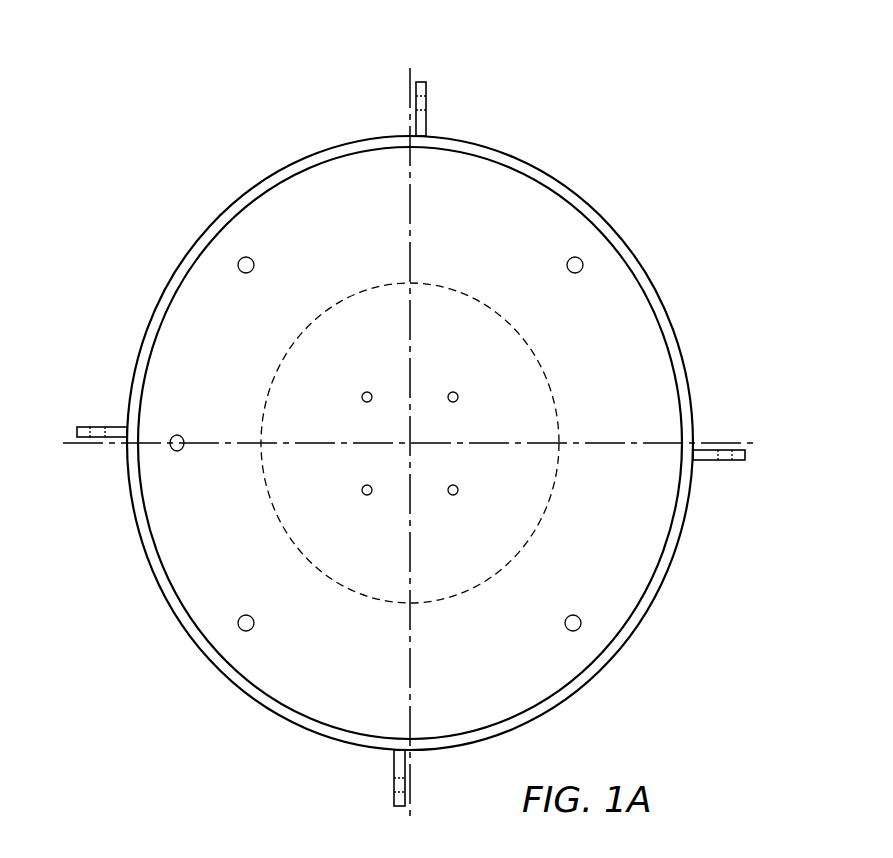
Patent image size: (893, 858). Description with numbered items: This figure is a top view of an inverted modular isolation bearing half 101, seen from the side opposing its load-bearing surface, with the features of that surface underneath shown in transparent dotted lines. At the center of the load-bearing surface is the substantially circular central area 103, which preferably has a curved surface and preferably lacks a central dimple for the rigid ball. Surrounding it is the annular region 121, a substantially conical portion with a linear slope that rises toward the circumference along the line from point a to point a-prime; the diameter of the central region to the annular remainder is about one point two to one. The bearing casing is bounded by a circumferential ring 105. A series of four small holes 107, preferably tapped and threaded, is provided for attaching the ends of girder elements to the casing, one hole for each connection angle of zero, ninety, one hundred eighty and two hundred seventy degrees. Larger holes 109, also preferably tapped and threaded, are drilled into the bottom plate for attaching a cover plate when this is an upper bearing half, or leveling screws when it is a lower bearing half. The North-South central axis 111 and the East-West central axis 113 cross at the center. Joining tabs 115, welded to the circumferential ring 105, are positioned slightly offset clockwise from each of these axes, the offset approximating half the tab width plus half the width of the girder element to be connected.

The modular isolation bearing half 101 is at (705, 306).
The substantially circular central area 103 is at (493, 388).
The circumferential ring 105 is at (553, 173).
The small holes 107 is at (367, 391).
The larger holes 109 is at (582, 623).
The North-South central axis 111 is at (410, 176).
The East-West central axis 113 is at (205, 448).
The tabs 115 is at (425, 82).
The annular region 121 is at (636, 380).